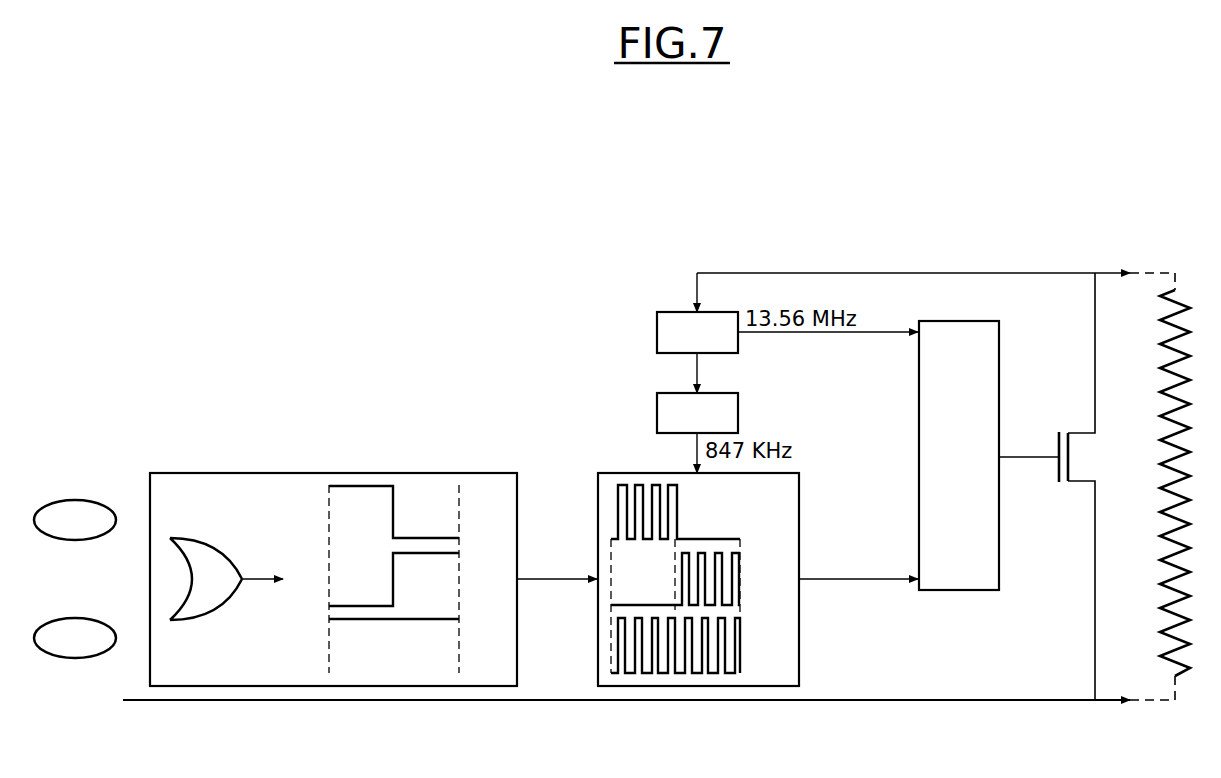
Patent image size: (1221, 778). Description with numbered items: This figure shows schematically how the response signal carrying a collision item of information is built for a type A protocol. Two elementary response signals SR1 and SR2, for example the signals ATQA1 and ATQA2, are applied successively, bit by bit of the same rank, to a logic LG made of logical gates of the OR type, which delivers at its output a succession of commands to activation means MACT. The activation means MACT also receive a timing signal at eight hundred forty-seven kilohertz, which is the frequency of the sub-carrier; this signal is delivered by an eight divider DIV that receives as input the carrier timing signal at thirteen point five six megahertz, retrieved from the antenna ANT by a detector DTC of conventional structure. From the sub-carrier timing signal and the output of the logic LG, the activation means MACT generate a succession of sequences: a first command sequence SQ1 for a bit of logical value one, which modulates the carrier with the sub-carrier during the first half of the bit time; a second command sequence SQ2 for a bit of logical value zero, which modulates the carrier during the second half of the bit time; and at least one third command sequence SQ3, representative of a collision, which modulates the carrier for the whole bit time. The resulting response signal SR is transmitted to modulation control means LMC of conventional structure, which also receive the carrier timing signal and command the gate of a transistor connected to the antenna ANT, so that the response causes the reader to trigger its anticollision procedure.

The elementary response signal SR1 is at (148, 520).
The elementary response signal SR2 is at (148, 638).
The logic LG is at (333, 472).
The activation means MACT is at (665, 555).
The first command sequence SQ1 is at (615, 506).
The second command sequence SQ2 is at (667, 573).
The third command sequence SQ3 is at (615, 652).
The detector DTC is at (697, 332).
The eight divider DIV is at (697, 413).
The modulation control means LMC is at (959, 455).
The response signal SR is at (858, 577).
The antenna ANT is at (1163, 272).